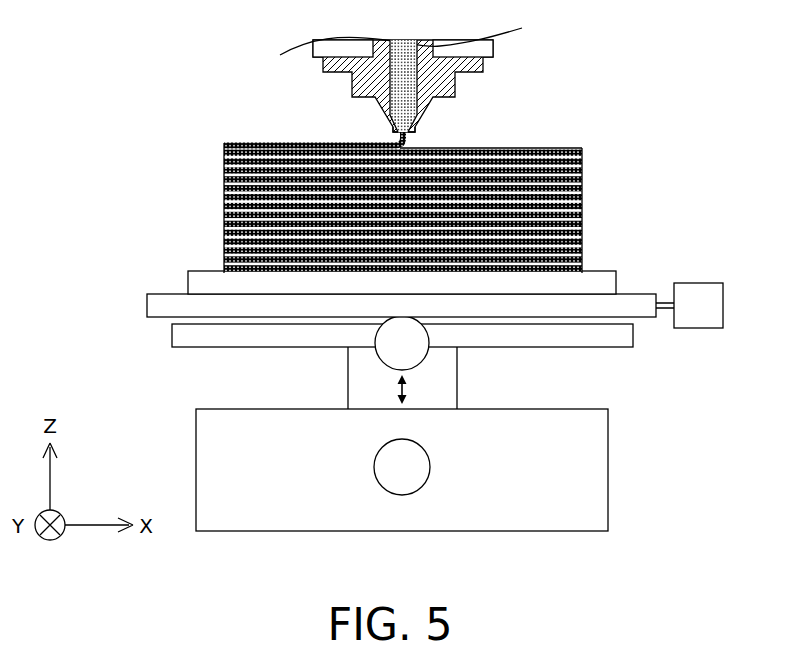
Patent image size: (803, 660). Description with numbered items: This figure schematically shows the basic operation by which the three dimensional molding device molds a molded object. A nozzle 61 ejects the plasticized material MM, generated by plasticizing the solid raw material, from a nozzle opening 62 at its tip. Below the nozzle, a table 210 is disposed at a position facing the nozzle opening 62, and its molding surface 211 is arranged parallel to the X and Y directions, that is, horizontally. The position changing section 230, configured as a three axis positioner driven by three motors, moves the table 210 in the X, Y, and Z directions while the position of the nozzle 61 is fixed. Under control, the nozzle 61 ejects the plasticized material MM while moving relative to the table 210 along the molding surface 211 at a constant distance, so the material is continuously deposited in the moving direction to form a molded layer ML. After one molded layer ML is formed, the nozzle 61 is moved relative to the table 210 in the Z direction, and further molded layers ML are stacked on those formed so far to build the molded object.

The nozzle 61 is at (334, 92).
The nozzle opening 62 is at (400, 133).
The plasticized material MM is at (417, 73).
The molded layer ML is at (224, 203).
The molding surface 211 is at (587, 268).
The table 210 is at (599, 282).
The position changing section 230 is at (648, 400).